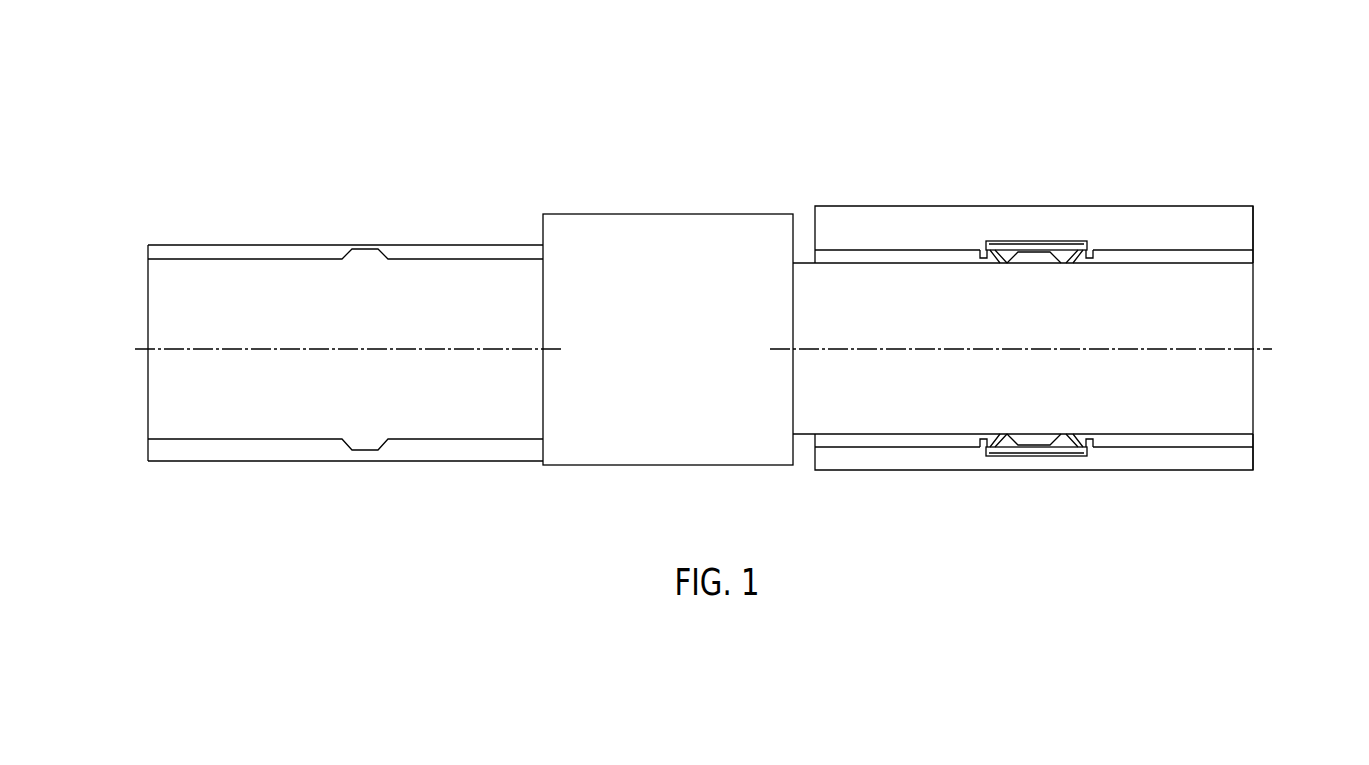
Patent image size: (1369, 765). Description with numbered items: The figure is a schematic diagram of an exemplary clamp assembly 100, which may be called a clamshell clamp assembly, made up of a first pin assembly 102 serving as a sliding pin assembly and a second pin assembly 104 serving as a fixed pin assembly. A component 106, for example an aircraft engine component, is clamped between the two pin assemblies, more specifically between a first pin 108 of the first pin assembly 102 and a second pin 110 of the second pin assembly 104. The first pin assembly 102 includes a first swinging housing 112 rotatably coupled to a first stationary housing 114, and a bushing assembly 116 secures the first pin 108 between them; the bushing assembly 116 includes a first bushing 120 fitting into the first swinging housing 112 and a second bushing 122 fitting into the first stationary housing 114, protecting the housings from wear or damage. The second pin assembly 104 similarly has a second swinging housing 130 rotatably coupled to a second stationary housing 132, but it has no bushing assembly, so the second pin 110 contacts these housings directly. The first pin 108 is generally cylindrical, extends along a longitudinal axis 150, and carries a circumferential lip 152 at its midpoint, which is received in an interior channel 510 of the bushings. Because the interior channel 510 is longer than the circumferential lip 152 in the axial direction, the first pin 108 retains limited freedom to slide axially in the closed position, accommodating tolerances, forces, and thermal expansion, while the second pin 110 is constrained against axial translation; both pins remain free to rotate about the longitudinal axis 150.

The clamp assembly 100 is at (565, 83).
The first pin assembly 102 is at (883, 173).
The second pin assembly 104 is at (333, 202).
The component 106 is at (641, 333).
The first pin 108 is at (1237, 285).
The second pin 110 is at (168, 287).
The first swinging housing 112 is at (1203, 222).
The first stationary housing 114 is at (1237, 463).
The bushing assembly 116 is at (1268, 247).
The first bushing 120 is at (1237, 258).
The second bushing 122 is at (1237, 440).
The second swinging housing 130 is at (173, 253).
The second stationary housing 132 is at (160, 452).
The longitudinal axis 150 is at (148, 348).
The circumferential lip 152 is at (1042, 262).
The interior channel 510 is at (1003, 262).